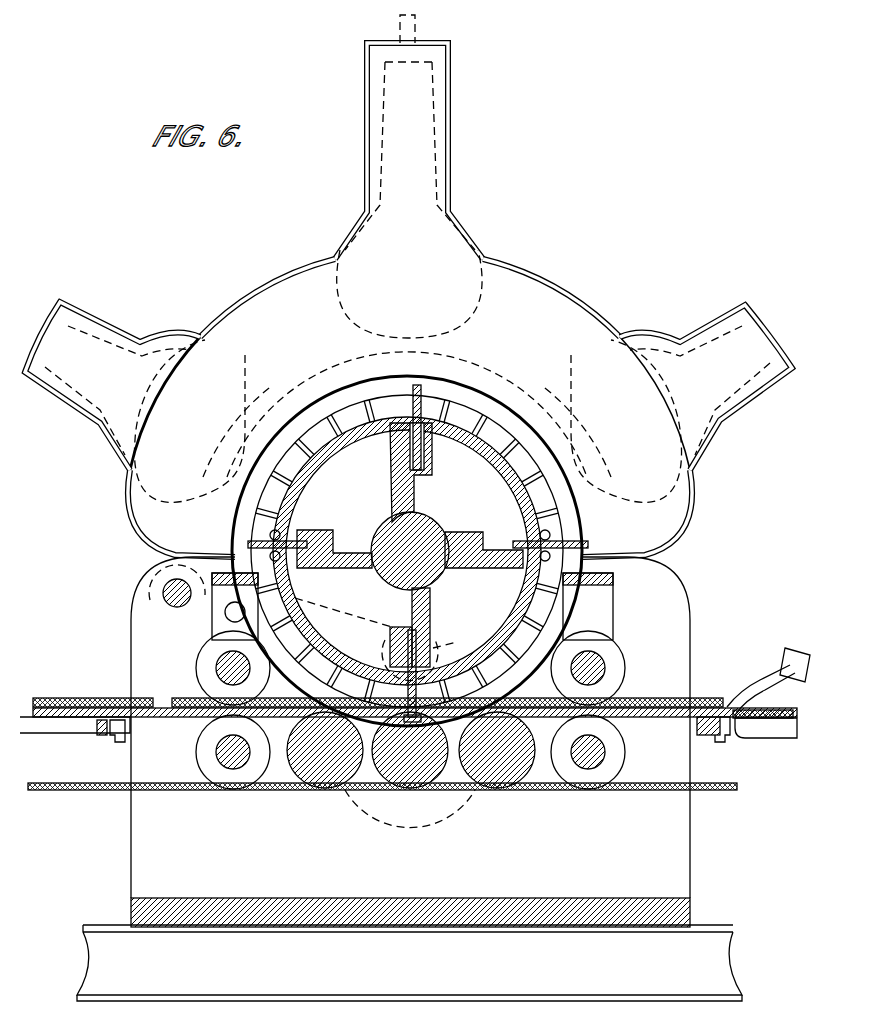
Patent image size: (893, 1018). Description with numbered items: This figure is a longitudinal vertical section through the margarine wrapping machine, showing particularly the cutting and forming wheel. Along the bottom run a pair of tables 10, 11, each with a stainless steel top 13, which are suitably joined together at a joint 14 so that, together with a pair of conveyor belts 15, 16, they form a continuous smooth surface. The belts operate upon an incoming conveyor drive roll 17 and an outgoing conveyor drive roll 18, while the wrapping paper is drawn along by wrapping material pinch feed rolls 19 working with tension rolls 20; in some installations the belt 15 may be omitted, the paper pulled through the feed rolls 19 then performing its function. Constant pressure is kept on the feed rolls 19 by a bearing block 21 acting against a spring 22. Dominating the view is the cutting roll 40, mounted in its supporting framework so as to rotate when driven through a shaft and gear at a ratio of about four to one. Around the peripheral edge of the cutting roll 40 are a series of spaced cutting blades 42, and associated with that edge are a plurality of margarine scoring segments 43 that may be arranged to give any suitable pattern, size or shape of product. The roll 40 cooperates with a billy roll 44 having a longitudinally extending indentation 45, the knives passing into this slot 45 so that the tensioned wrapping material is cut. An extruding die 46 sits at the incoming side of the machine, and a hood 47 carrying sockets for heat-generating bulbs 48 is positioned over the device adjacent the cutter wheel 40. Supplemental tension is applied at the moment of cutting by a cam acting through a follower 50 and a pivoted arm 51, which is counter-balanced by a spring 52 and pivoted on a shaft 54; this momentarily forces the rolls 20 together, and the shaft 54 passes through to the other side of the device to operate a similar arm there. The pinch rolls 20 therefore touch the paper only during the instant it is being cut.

The table 10 is at (795, 738).
The table 11 is at (50, 765).
The stainless steel tops 13 is at (75, 698).
The table joint 14 is at (118, 736).
The conveyor belt 15 is at (625, 791).
The conveyor belt 16 is at (200, 792).
The incoming conveyor drive roll 17 is at (507, 786).
The outgoing conveyor drive roll 18 is at (325, 786).
The wrapping material pinch feed rolls 19 is at (610, 733).
The tension rolls 20 is at (210, 741).
The bearing block 21 is at (583, 612).
The spring 22 is at (600, 580).
The cutting roll 40 is at (432, 522).
The cutting blades 42 is at (417, 385).
The margarine scoring segments 43 is at (372, 408).
The billy roll 44 is at (430, 790).
The indentation 45 is at (505, 652).
The extruding die 46 is at (788, 650).
The hood 47 is at (514, 263).
The heat-generating bulbs 48 is at (320, 314).
The follower 50 is at (440, 652).
The pivoted arm 51 is at (364, 622).
The spring 52 is at (212, 600).
The shaft 54 is at (170, 590).